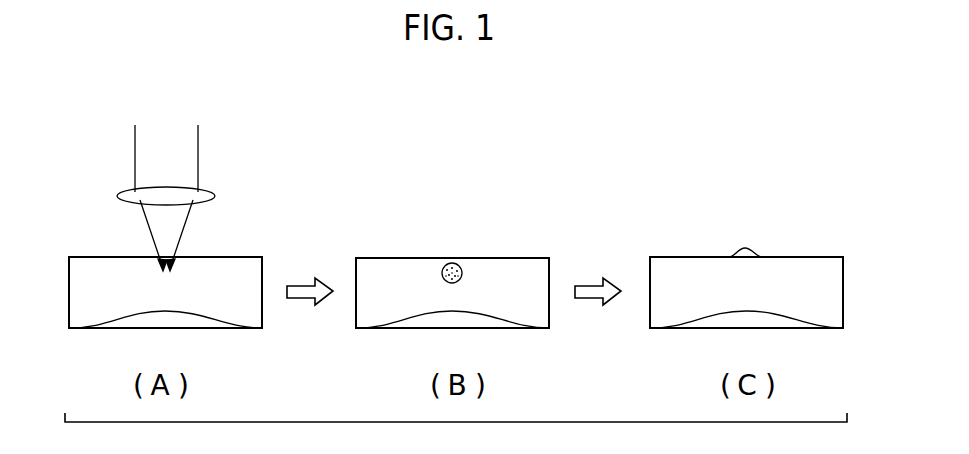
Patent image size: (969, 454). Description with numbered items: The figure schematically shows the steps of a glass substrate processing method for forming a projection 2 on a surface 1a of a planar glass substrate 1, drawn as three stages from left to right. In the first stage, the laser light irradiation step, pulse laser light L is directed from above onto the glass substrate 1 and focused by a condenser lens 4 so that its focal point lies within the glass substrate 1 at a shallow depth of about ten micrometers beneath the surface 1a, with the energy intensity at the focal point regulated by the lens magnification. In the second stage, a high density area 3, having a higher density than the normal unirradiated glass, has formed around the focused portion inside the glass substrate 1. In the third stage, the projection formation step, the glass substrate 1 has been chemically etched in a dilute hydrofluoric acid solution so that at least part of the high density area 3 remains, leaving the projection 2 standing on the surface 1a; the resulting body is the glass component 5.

The glass substrate 1 is at (90, 316).
The surface of glass substrate 1a is at (85, 257).
The pulse laser light L is at (133, 161).
The condenser lens 4 is at (214, 198).
The high density area 3 is at (455, 262).
The projection 2 is at (748, 249).
The glass component 5 is at (830, 243).